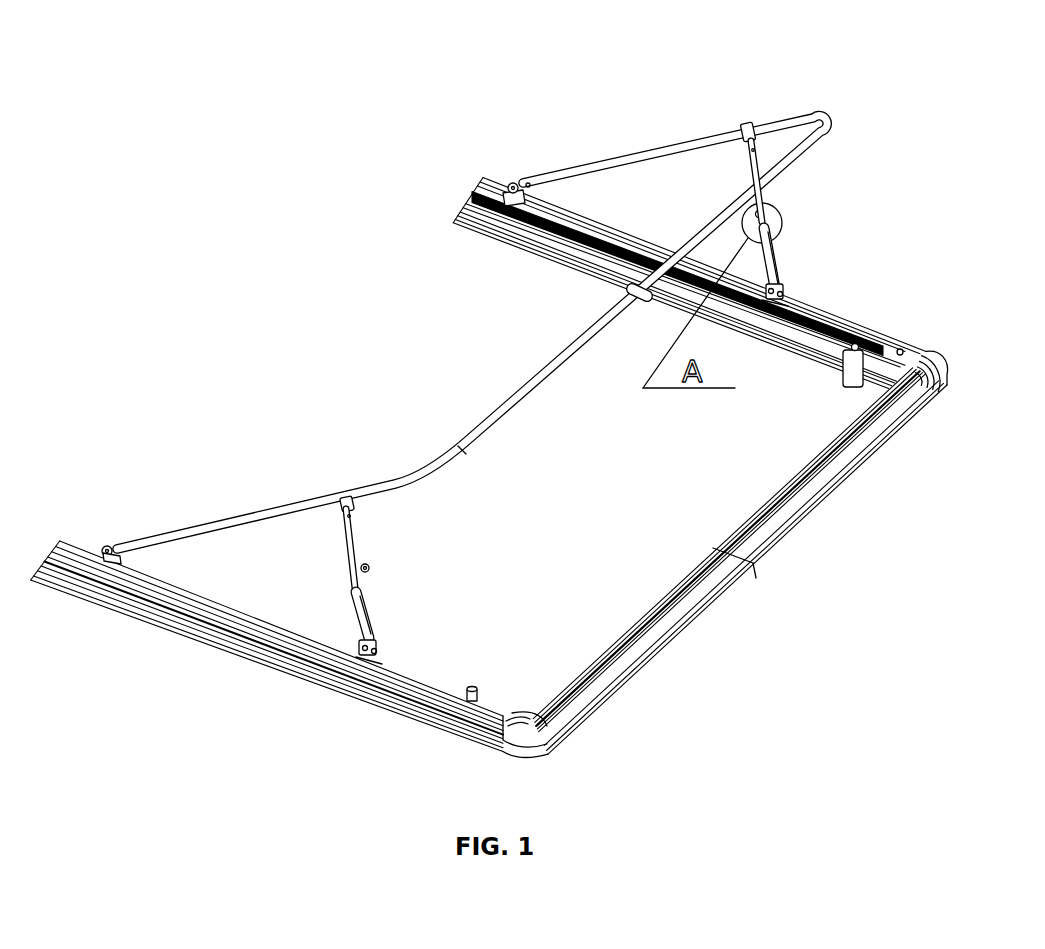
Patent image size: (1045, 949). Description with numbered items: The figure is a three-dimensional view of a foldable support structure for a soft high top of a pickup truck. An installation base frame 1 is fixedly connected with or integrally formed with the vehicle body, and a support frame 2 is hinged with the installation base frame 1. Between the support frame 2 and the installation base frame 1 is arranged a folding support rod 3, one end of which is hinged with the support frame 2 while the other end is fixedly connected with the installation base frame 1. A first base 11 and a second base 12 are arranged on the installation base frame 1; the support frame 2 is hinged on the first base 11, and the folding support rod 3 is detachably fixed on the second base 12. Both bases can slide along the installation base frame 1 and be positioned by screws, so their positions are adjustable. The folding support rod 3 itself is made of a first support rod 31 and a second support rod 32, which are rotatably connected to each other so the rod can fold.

The installation base frame 1 is at (808, 304).
The support frame 2 is at (680, 143).
The folding support rod 3 is at (767, 193).
The first base 11 is at (507, 186).
The second base 12 is at (783, 294).
The first support rod 31 is at (357, 590).
The second support rod 32 is at (347, 560).